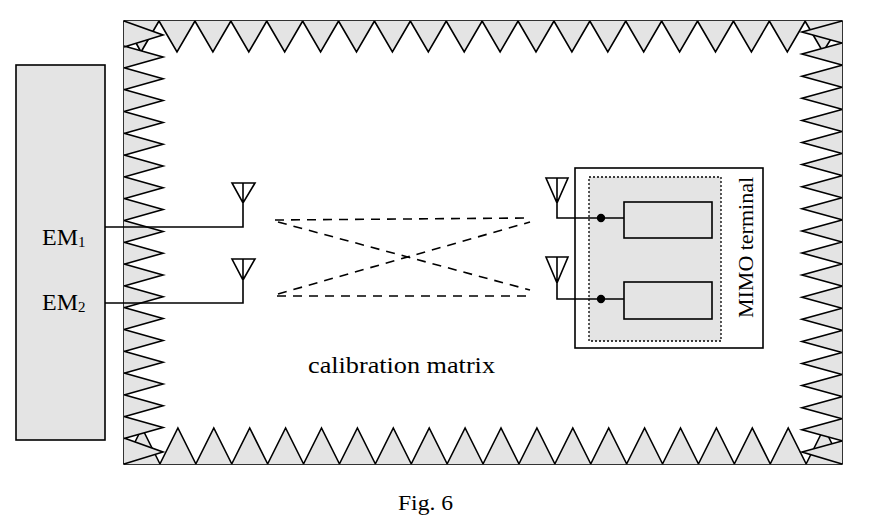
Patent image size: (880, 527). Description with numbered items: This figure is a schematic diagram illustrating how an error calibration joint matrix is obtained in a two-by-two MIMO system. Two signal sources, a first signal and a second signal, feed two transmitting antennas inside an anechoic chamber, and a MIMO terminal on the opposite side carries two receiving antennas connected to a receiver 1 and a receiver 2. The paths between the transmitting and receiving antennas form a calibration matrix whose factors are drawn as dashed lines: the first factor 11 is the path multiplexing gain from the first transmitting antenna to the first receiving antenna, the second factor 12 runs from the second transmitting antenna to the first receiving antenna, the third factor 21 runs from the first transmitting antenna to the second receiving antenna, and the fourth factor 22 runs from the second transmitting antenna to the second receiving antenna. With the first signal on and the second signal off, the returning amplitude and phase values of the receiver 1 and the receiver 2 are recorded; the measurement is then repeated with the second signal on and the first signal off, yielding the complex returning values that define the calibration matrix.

The receiver 1 is at (668, 220).
The receiver 2 is at (668, 300).
The calibration matrix factor a11 11 is at (402, 209).
The calibration matrix factor a12 12 is at (404, 258).
The calibration matrix factor a21 21 is at (404, 256).
The calibration matrix factor a22 22 is at (403, 308).